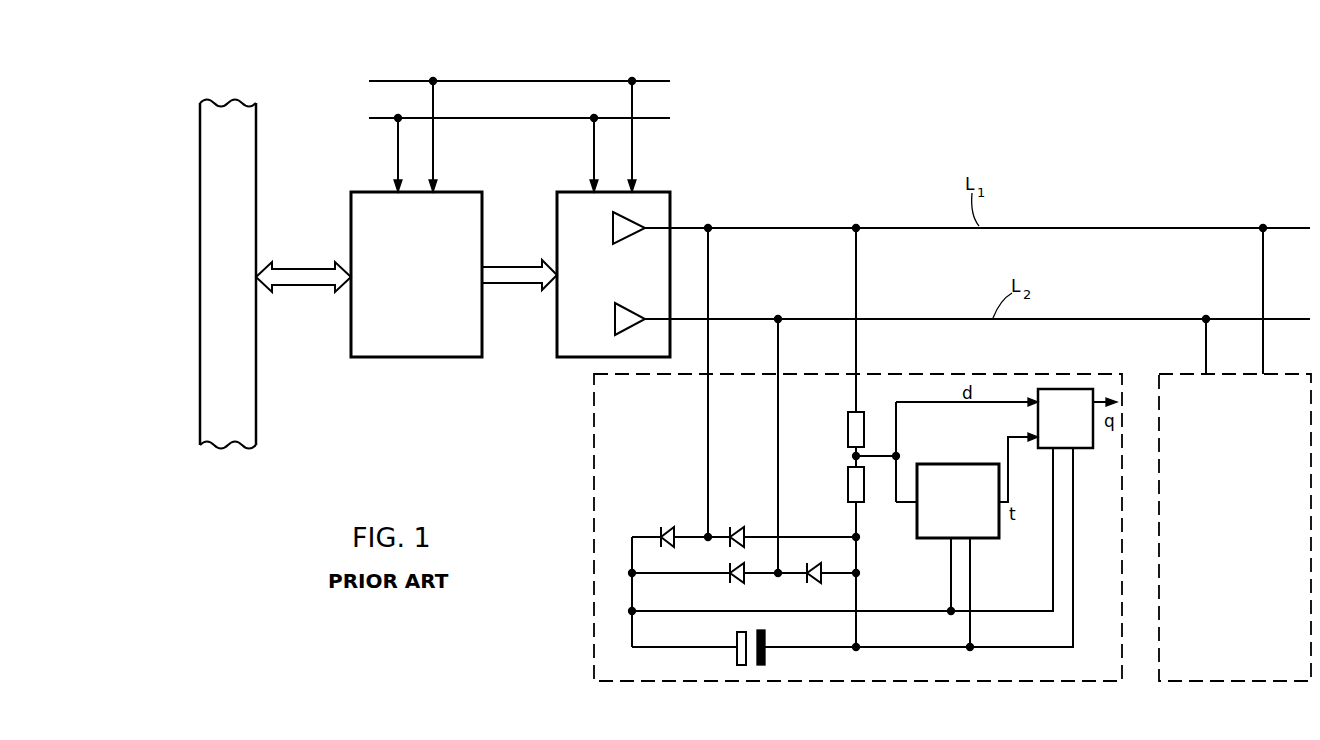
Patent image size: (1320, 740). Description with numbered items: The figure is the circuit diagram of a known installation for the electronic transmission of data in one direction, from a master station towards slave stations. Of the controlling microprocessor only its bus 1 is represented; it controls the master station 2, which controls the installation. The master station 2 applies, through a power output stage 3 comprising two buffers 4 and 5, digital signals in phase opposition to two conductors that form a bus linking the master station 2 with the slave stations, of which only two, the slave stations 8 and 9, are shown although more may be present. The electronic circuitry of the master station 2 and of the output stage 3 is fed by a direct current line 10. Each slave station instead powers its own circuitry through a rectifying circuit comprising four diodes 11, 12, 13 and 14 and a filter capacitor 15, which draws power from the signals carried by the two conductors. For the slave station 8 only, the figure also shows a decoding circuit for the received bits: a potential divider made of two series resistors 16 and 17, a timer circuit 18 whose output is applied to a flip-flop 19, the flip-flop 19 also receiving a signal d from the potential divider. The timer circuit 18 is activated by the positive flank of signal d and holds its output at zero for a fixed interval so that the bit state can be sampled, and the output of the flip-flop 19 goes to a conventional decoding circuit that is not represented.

The bus 1 is at (232, 202).
The master station 2 is at (452, 221).
The power output stage 3 is at (568, 340).
The buffer 4 is at (613, 227).
The buffer 5 is at (615, 312).
The slave station 8 is at (597, 616).
The slave station 9 is at (1162, 615).
The direct current line 10 is at (527, 118).
The diode 11 is at (668, 527).
The diode 12 is at (738, 527).
The diode 13 is at (727, 578).
The diode 14 is at (805, 578).
The filter capacitor 15 is at (770, 636).
The resistor 16 is at (848, 432).
The resistor 17 is at (848, 486).
The timer circuit 18 is at (978, 530).
The flip-flop 19 is at (1087, 448).